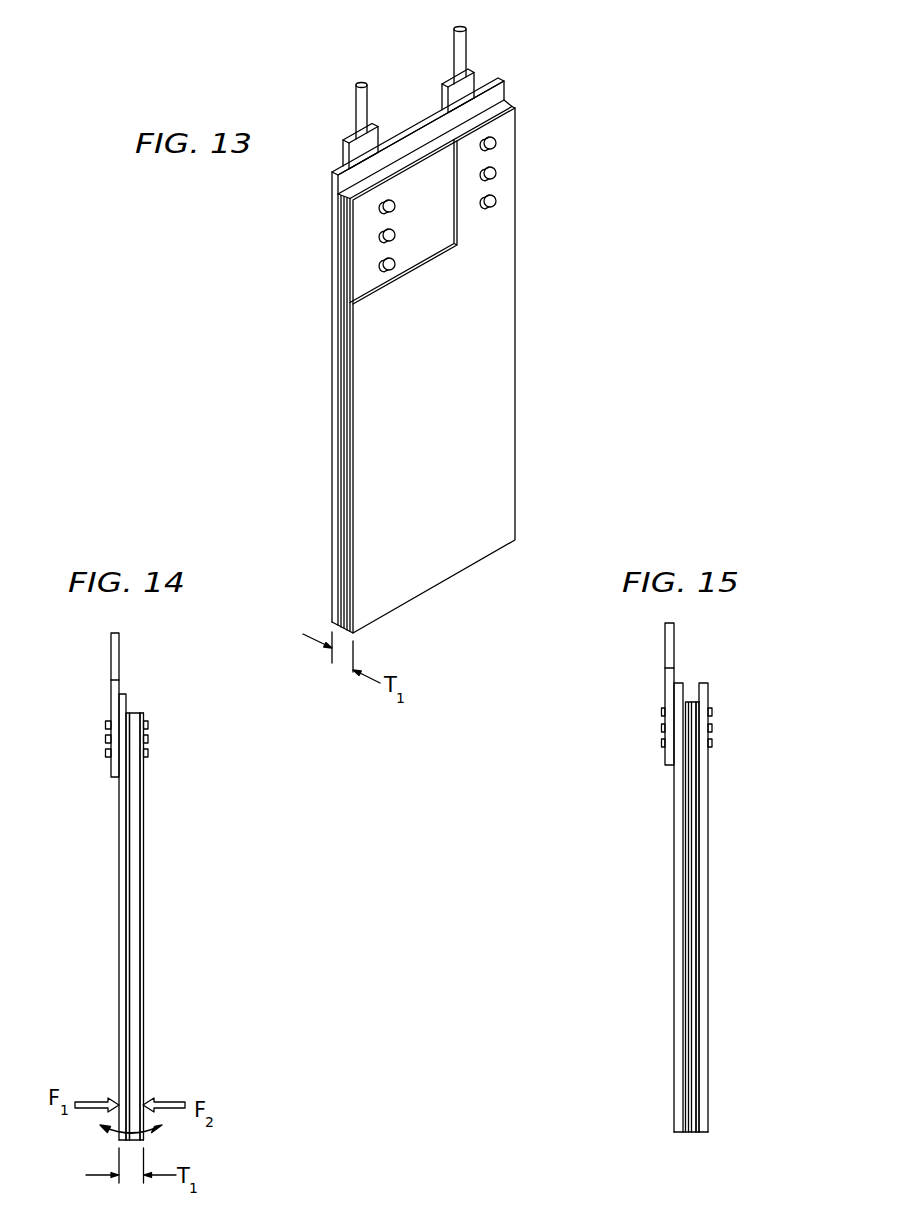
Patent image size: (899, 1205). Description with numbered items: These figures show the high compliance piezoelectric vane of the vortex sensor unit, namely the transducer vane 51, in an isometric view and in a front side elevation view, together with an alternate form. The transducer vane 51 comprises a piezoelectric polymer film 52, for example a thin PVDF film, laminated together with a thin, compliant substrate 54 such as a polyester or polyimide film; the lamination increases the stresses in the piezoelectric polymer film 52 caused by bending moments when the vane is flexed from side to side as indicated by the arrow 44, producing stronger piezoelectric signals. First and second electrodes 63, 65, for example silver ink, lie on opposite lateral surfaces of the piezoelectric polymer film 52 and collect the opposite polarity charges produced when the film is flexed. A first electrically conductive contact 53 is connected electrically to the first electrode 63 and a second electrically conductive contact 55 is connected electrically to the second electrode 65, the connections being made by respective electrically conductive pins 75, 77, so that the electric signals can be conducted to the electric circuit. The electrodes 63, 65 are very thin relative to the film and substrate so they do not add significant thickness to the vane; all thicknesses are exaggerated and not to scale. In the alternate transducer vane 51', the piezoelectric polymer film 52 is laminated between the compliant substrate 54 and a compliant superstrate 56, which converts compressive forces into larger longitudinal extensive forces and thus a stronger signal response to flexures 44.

In FIG. 13, the transducer vane 51 is at (348, 334).
In FIG. 14, the transducer vane 51 is at (169, 896).
In FIG. 15, the alternative transducer vane 51' is at (738, 890).
In FIG. 13, the piezoelectric polymer film 52 is at (515, 104).
In FIG. 14, the piezoelectric polymer film 52 is at (142, 938).
In FIG. 15, the piezoelectric polymer film 52 is at (697, 890).
In FIG. 13, the first electrically conductive contact 53 is at (343, 135).
In FIG. 14, the first electrically conductive contact 53 is at (111, 690).
In FIG. 15, the first electrically conductive contact 53 is at (665, 688).
In FIG. 13, the compliant substrate 54 is at (333, 425).
In FIG. 14, the compliant substrate 54 is at (118, 957).
In FIG. 15, the compliant substrate 54 is at (675, 908).
In FIG. 13, the second electrically conductive contact 55 is at (447, 79).
In FIG. 15, the compliant superstrate 56 is at (709, 940).
In FIG. 13, the first electrode 63 is at (337, 215).
In FIG. 14, the first electrode 63 is at (125, 889).
In FIG. 15, the first electrode 63 is at (682, 843).
In FIG. 13, the second electrode 65 is at (517, 138).
In FIG. 14, the second electrode 65 is at (145, 900).
In FIG. 15, the second electrode 65 is at (702, 845).
In FIG. 13, the electrically conductive pin 75 is at (383, 267).
In FIG. 14, the electrically conductive pin 75 is at (105, 753).
In FIG. 13, the electrically conductive pin 77 is at (497, 203).
In FIG. 14, the arrow 44 is at (114, 1136).